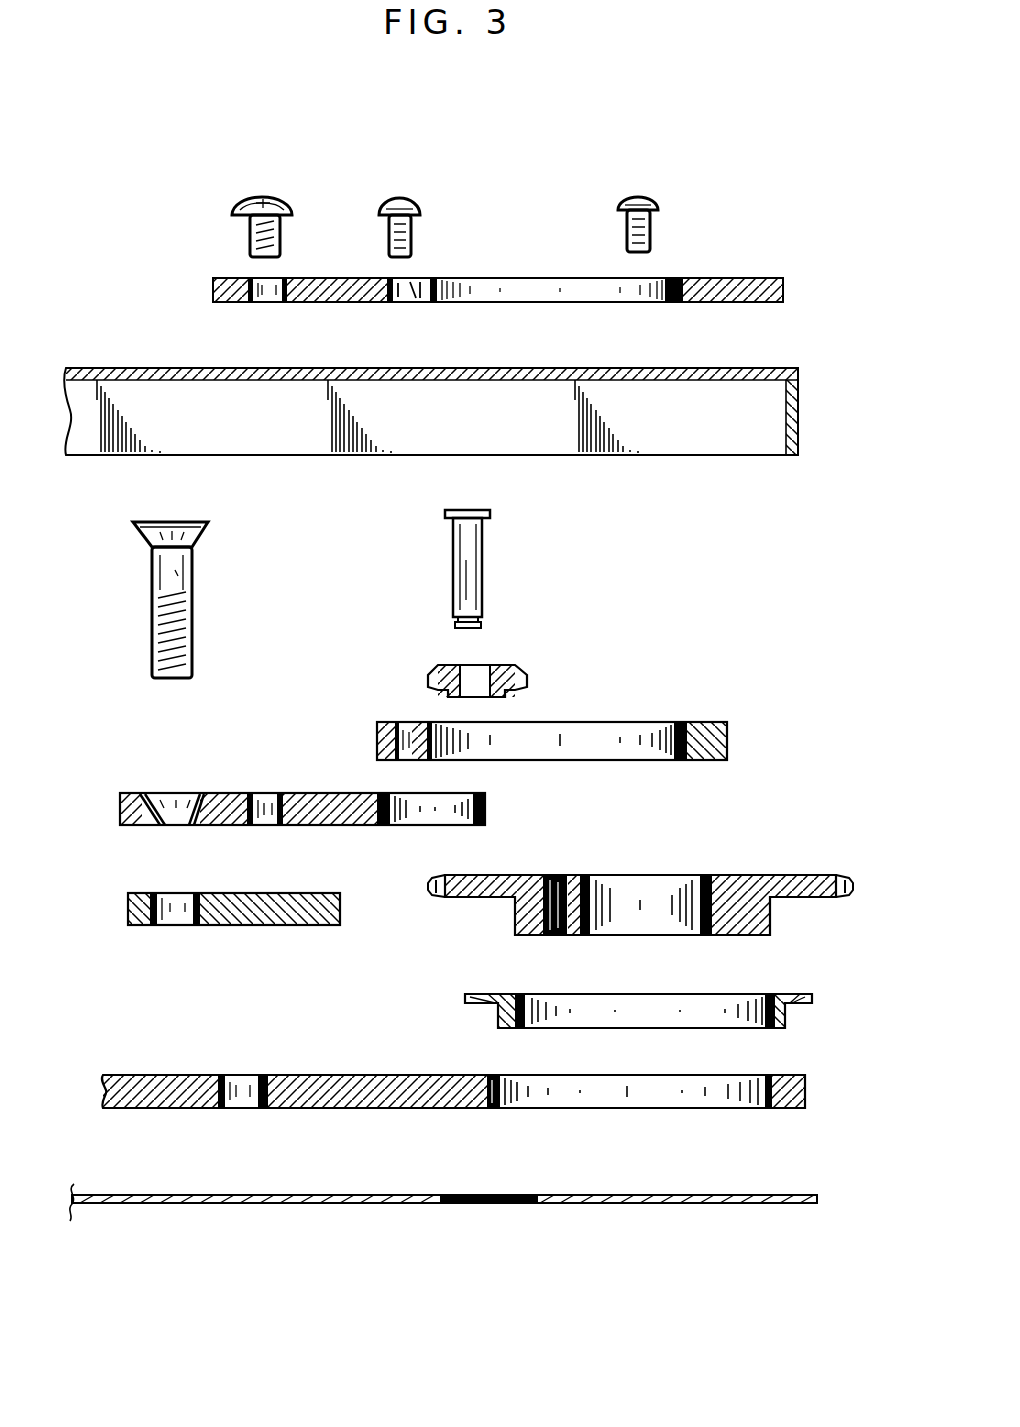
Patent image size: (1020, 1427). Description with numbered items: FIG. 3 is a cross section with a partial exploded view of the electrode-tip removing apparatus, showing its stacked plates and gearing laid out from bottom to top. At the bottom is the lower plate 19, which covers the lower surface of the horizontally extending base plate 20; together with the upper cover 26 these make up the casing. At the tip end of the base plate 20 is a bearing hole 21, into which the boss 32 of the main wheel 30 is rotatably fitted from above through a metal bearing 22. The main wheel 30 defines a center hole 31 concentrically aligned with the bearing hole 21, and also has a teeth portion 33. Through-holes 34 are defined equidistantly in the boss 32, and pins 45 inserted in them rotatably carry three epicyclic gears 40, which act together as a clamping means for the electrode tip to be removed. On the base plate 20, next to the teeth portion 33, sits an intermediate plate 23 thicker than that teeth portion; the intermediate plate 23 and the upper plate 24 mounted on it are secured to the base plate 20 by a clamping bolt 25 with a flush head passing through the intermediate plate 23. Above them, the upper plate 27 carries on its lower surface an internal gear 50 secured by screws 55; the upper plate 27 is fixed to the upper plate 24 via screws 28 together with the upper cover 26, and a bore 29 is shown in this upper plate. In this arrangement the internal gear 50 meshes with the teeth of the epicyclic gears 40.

The lower plate 19 is at (298, 1203).
The base plate 20 is at (453, 1127).
The bearing hole 21 is at (510, 1103).
The bearing 22 is at (508, 1012).
The intermediate plate 23 is at (252, 912).
The upper plate 24 is at (292, 793).
The clamping bolt 25 is at (193, 563).
The upper cover 26 is at (143, 368).
The upper plate 27 is at (505, 247).
The screws 28 is at (266, 197).
The bore of upper plate 29 is at (668, 279).
The main wheel 30 is at (643, 884).
The center hole 31 is at (685, 888).
The boss 32 is at (510, 920).
The teeth portion 33 is at (838, 874).
The through-holes 34 is at (553, 876).
The epicyclic gears 40 is at (510, 665).
The pins 45 is at (484, 563).
The internal gear 50 is at (700, 722).
The screws 55 is at (400, 198).